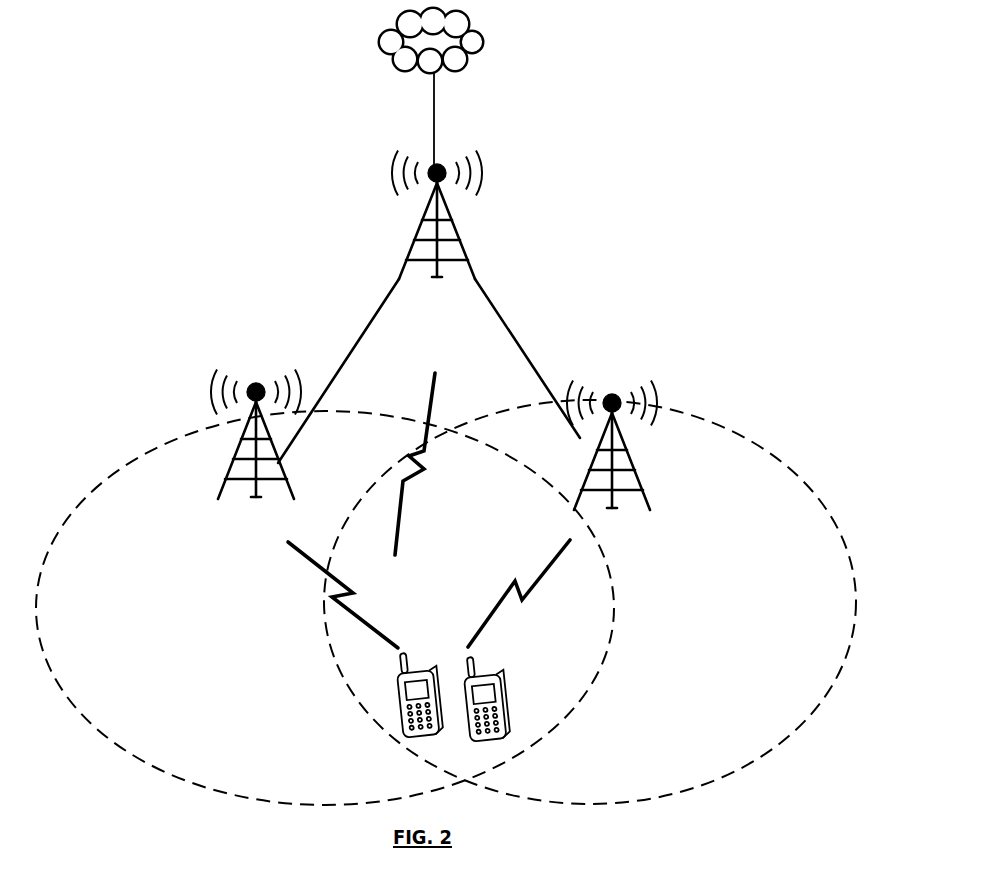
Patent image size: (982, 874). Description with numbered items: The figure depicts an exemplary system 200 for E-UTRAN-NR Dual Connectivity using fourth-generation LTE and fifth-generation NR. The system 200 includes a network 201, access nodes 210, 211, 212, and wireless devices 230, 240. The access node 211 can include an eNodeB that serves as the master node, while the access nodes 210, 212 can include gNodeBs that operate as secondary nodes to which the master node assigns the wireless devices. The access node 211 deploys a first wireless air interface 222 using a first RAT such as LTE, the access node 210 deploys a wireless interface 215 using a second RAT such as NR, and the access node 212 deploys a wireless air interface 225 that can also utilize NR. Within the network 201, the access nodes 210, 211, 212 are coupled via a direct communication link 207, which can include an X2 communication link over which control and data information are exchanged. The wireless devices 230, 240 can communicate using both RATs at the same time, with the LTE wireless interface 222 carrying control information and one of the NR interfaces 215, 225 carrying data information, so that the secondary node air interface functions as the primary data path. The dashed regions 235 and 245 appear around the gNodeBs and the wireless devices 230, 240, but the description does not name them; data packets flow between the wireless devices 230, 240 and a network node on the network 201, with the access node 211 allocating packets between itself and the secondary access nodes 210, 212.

The system 200 is at (549, 114).
The network 201 is at (448, 53).
The direct communication link 207 is at (524, 352).
The access node 210 is at (224, 486).
The access node 211 is at (497, 280).
The access node 212 is at (624, 446).
The wireless interface 215 is at (346, 609).
The first wireless air interface 222 is at (403, 461).
The wireless air interface 225 is at (525, 598).
The wireless device 230 is at (418, 737).
The coverage area of gNB 210 235 is at (172, 778).
The wireless device 240 is at (506, 700).
The coverage area of gNB 212 245 is at (602, 807).